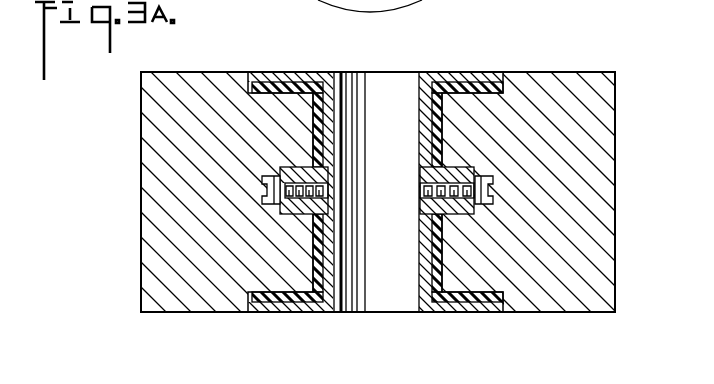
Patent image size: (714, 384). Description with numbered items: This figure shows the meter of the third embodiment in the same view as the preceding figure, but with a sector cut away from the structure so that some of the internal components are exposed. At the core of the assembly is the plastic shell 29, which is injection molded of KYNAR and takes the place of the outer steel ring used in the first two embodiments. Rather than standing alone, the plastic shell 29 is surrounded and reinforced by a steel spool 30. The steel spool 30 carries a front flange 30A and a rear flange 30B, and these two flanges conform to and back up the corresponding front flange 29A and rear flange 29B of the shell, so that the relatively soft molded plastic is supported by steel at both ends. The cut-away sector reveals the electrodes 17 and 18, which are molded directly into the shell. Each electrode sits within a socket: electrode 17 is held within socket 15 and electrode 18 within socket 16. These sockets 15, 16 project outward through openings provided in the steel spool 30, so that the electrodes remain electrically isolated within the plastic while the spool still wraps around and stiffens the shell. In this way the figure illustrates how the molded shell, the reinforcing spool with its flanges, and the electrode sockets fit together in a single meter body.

The socket 15 is at (278, 200).
The socket 16 is at (470, 168).
The electrode 17 is at (493, 200).
The electrode 18 is at (287, 217).
The plastic shell 29 is at (345, 95).
The front flange 29A is at (340, 88).
The rear flange 29B is at (273, 313).
The steel spool 30 is at (312, 134).
The front flange 30A is at (254, 92).
The rear flange 30B is at (253, 290).